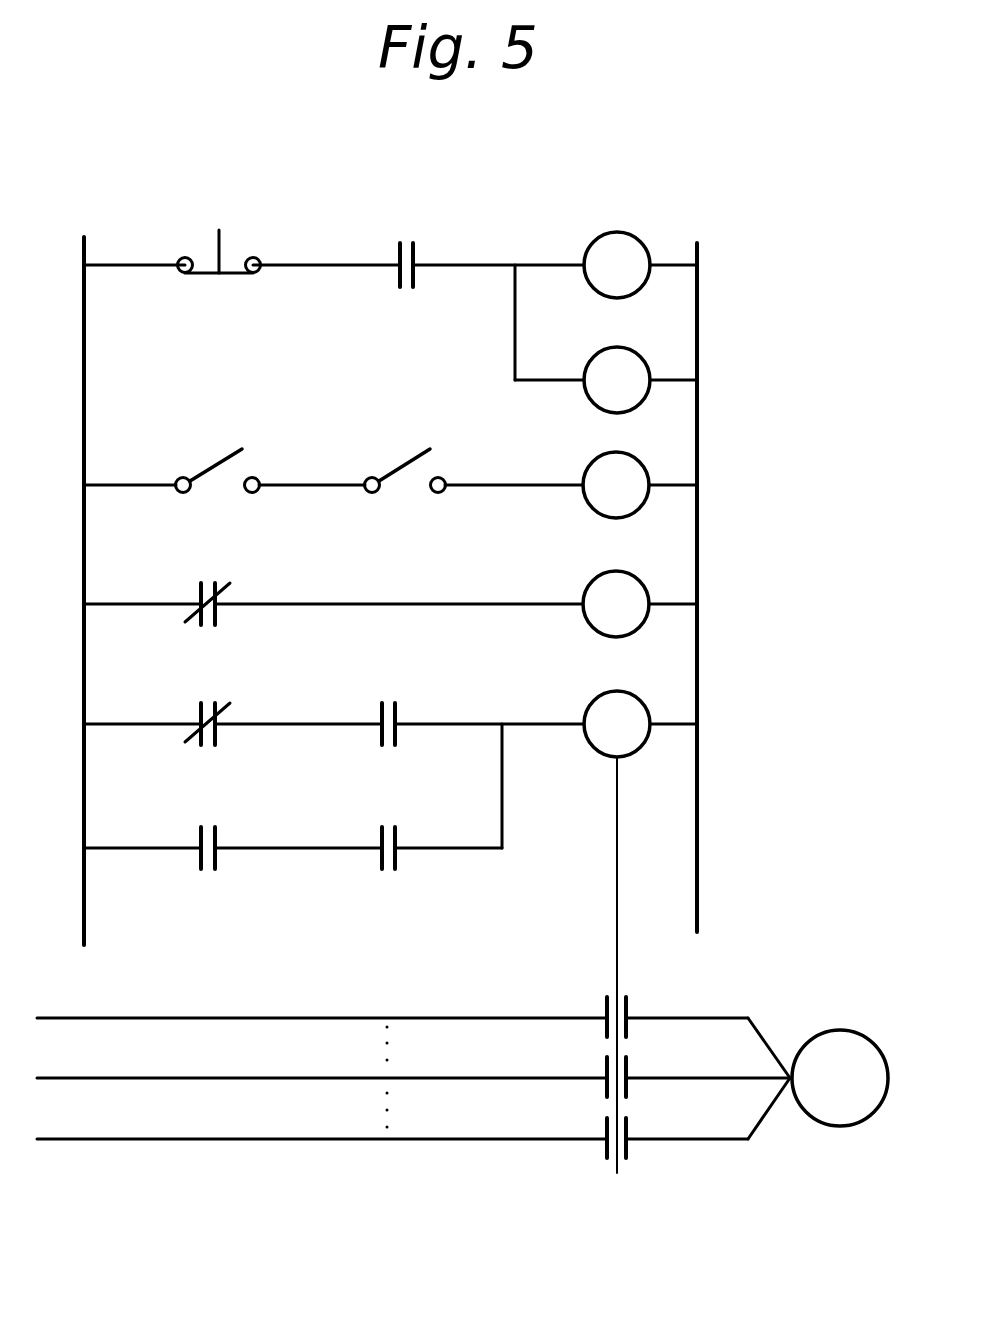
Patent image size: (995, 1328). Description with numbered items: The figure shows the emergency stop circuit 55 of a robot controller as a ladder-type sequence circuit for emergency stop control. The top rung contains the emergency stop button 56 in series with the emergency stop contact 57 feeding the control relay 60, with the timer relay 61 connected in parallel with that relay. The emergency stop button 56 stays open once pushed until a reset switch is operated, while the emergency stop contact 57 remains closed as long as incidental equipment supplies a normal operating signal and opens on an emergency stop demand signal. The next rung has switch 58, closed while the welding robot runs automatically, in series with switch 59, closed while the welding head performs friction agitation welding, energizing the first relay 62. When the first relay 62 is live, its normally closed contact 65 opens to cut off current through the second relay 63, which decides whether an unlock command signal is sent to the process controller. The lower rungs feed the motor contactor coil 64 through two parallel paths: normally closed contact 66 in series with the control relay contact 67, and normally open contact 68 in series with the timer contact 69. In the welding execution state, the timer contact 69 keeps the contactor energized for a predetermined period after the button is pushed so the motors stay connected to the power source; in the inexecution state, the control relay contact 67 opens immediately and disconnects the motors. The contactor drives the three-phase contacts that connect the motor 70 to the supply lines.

The emergency stop circuit 55 is at (664, 197).
The emergency stop button 56 is at (219, 252).
The emergency stop contact 57 is at (415, 252).
The switch 58 is at (205, 468).
The switch 59 is at (397, 465).
The relay (CR) 60 is at (586, 246).
The timer relay (T) 61 is at (586, 362).
The relay (R1) 62 is at (586, 462).
The relay (R2) 63 is at (587, 580).
The motor contactor MC 64 is at (590, 700).
The normally closed contact (R1) 65 is at (197, 590).
The normally closed contact (R1) 66 is at (197, 710).
The contact (CR) 67 is at (378, 706).
The normally open contact (R1) 68 is at (197, 831).
The contact (T) 69 is at (378, 831).
The power source relay (MC) 70 is at (855, 1030).